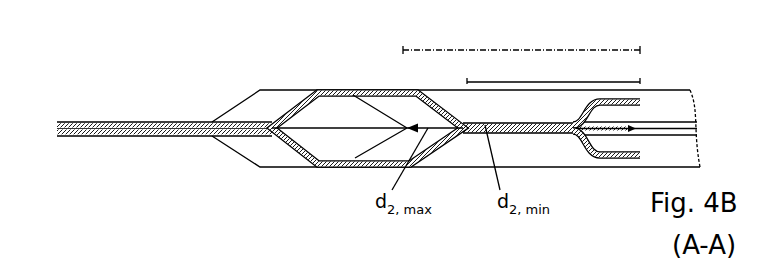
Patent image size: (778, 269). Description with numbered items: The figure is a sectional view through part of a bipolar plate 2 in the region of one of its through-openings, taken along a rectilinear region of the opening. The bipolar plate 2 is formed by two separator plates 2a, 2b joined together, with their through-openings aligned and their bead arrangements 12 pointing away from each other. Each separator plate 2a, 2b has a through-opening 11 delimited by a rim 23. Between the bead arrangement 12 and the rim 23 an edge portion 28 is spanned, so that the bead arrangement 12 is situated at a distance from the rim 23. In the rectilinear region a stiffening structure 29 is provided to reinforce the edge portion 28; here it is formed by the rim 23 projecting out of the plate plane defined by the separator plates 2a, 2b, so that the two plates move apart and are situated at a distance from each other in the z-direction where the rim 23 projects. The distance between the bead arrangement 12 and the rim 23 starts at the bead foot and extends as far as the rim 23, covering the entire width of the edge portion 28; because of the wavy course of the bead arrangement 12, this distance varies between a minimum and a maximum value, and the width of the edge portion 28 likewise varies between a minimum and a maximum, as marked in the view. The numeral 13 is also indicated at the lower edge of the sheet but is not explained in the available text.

The bipolar plate 2 is at (53, 83).
The separator plate 2a is at (128, 124).
The separator plate 2b is at (148, 133).
The through-opening 11 is at (693, 158).
The bead arrangement 12 is at (370, 89).
The distal section 13 is at (353, 265).
The rim 23 is at (641, 102).
The edge portion 28 is at (521, 53).
The stiffening structure 29 is at (641, 101).